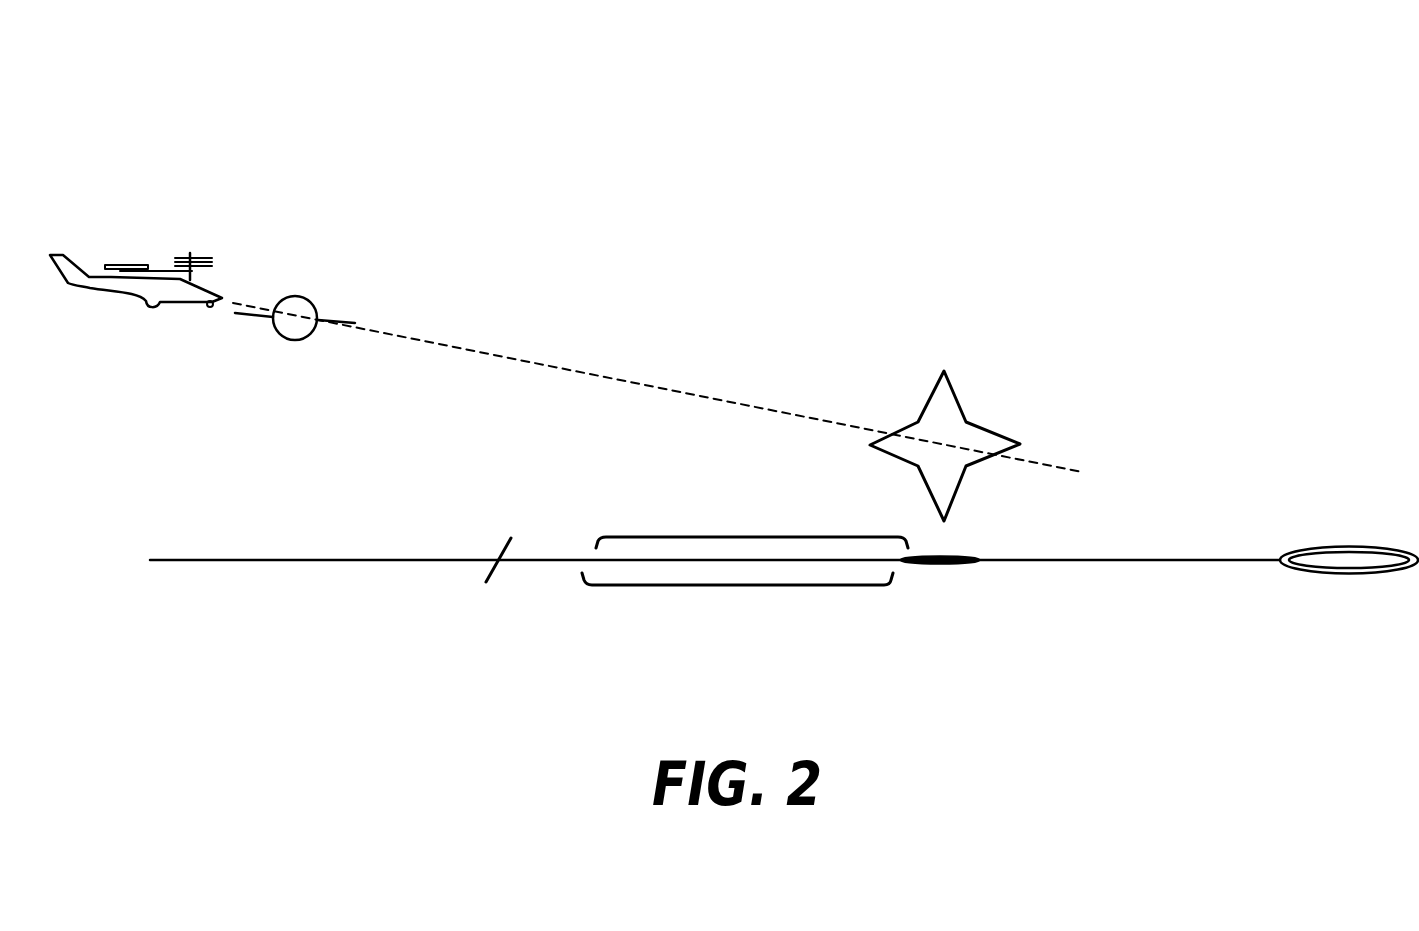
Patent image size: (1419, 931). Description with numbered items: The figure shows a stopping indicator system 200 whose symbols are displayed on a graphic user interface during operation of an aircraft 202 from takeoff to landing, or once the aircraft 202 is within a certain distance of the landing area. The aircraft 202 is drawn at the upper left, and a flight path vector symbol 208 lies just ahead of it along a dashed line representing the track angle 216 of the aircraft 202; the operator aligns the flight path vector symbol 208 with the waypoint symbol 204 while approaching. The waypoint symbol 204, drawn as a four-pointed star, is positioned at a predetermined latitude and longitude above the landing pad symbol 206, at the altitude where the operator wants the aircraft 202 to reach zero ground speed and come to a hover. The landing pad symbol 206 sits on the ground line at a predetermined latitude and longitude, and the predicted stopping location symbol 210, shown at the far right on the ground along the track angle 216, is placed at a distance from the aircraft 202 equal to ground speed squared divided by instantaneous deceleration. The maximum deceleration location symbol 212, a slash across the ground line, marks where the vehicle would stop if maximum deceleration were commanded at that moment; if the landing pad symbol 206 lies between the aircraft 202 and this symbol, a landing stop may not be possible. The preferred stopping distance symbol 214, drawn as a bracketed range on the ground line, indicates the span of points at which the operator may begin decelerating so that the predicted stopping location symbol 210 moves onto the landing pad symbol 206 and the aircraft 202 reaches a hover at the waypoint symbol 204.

The stopping indicator system 200 is at (451, 171).
The aircraft 202 is at (156, 244).
The waypoint symbol 204 is at (924, 360).
The landing pad symbol 206 is at (958, 582).
The flight path vector symbol 208 is at (313, 282).
The predicted stopping location symbol 210 is at (1354, 522).
The maximum deceleration location symbol 212 is at (502, 598).
The preferred stopping distance symbol 214 is at (720, 603).
The track angle 216 is at (362, 542).